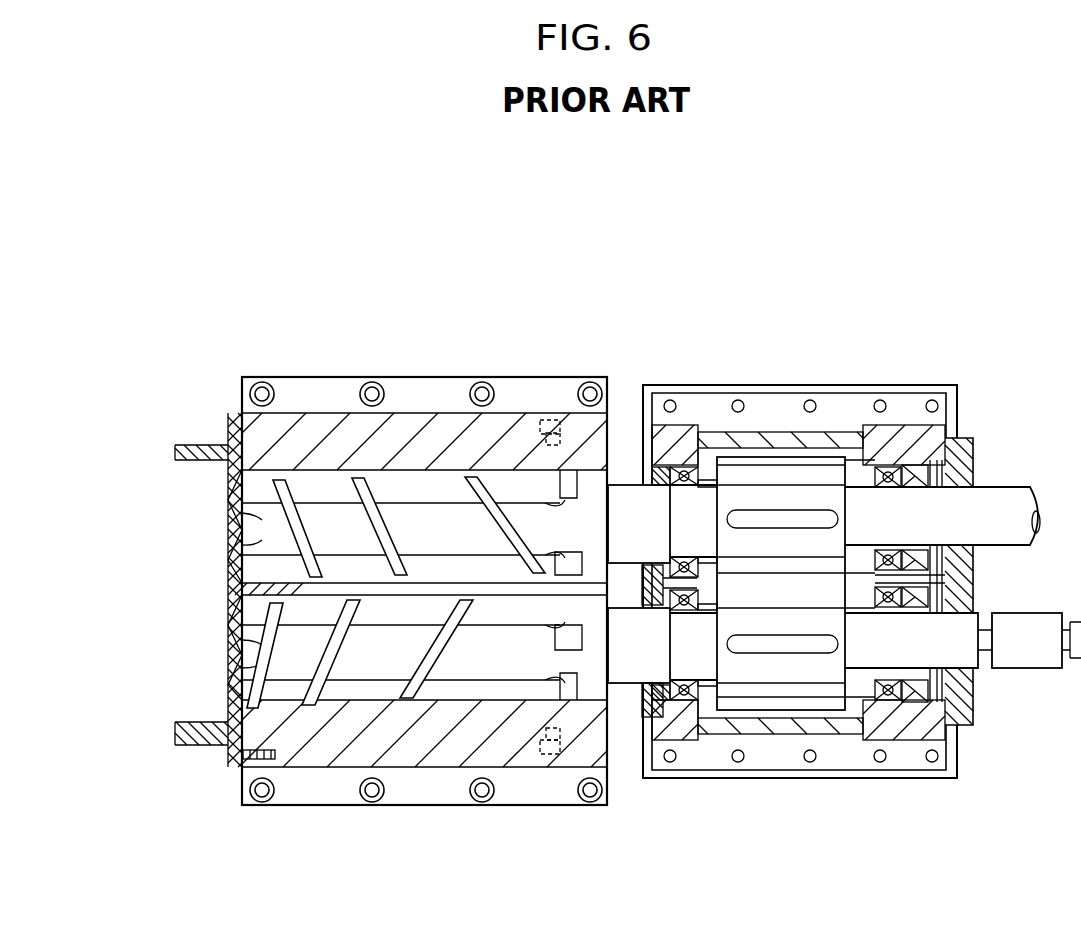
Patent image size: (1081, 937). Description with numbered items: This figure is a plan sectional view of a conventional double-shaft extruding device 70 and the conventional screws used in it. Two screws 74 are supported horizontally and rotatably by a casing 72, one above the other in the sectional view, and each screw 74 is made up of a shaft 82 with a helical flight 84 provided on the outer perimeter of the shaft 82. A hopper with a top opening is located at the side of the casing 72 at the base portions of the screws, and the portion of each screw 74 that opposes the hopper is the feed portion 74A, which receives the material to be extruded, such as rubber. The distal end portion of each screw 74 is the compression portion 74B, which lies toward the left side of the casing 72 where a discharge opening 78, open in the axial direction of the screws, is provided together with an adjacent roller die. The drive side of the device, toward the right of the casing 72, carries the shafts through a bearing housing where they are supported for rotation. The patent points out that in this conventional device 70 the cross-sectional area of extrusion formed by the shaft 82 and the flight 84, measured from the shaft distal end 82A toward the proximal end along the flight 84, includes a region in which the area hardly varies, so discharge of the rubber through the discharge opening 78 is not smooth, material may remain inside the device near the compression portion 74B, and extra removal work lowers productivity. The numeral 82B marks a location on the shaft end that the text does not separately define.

The double-shaft extruding device 70 is at (648, 262).
The casing 72 is at (447, 372).
The screw 74 is at (318, 498).
The feed portion 74A is at (518, 512).
The compression portion 74B is at (275, 652).
The discharge opening 78 is at (240, 492).
The shaft 82 is at (556, 516).
The shaft distal end 82A is at (252, 540).
The drive unit coupling end 82B is at (570, 470).
The flight 84 is at (397, 503).